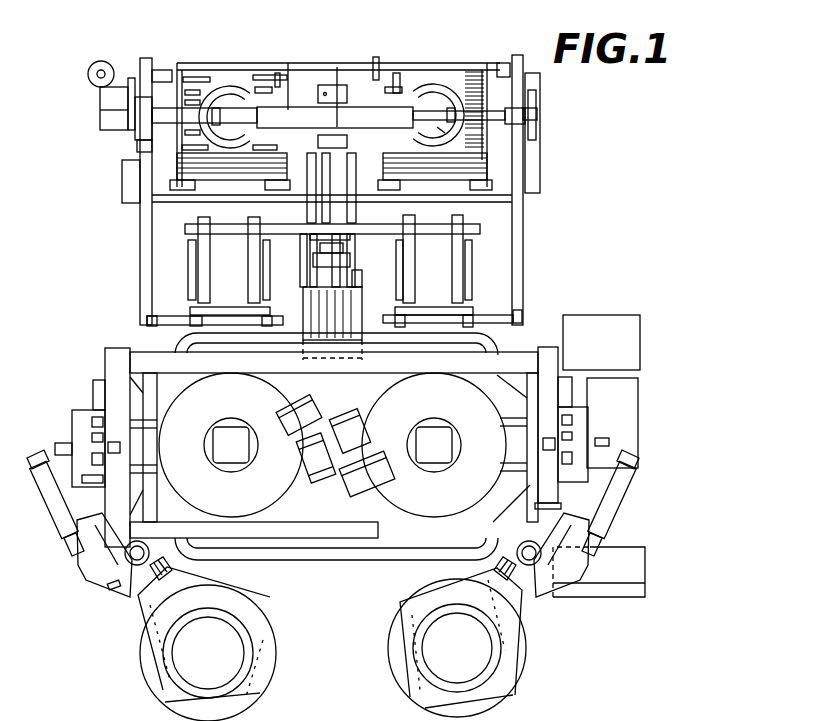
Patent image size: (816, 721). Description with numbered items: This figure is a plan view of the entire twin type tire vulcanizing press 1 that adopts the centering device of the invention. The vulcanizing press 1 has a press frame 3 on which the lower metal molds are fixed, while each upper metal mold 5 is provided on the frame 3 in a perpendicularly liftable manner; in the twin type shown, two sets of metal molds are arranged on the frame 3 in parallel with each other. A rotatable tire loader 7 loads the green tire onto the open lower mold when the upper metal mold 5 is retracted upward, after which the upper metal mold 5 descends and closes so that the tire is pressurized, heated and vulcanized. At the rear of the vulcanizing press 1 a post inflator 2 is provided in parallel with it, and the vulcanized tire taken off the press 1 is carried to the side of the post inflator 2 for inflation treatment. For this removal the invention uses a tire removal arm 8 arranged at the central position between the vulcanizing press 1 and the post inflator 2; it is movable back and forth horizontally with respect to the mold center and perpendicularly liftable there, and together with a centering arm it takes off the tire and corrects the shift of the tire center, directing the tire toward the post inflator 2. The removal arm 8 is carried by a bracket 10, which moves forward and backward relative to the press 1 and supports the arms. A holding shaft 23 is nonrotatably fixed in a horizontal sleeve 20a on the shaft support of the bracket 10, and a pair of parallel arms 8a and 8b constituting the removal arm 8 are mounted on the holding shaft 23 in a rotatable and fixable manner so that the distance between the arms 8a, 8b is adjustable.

The tire vulcanizing press 1 is at (343, 565).
The post inflator 2 is at (496, 167).
The press frame 3 is at (543, 363).
The upper metal mold 5 is at (262, 497).
The tire loader 7 is at (162, 675).
The tire removal arm 8 is at (188, 230).
The arm 8a is at (257, 272).
The arm 8b is at (206, 278).
The bracket 10 is at (313, 258).
The horizontal sleeve 20a is at (365, 188).
The holding shaft 23 is at (388, 228).